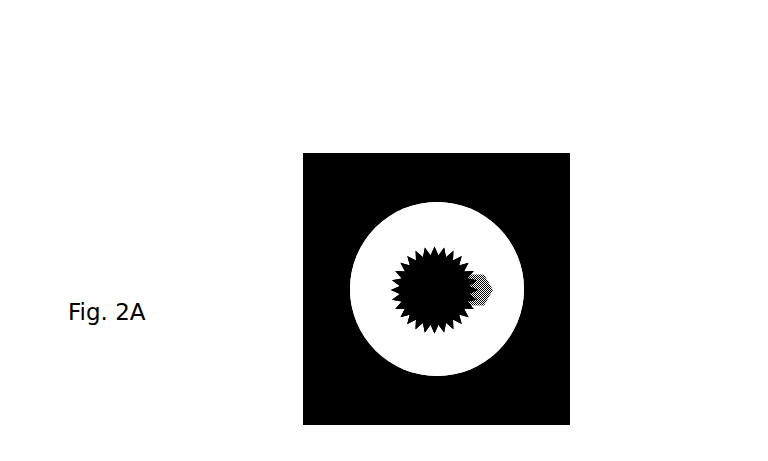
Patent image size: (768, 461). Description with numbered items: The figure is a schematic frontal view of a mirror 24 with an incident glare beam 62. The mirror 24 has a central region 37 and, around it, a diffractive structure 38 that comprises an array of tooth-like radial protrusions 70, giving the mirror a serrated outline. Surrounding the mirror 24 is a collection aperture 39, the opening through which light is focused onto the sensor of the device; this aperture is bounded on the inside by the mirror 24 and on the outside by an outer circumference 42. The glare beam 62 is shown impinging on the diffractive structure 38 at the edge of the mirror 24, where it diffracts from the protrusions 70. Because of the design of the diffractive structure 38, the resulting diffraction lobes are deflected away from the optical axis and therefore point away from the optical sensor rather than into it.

The mirror 24 is at (432, 247).
The central region 37 is at (433, 287).
The diffractive structure 38 is at (463, 325).
The collection aperture 39 is at (393, 238).
The outer circumference 42 is at (507, 238).
The glare beam 62 is at (490, 293).
The tooth-like radial protrusions 70 is at (478, 267).